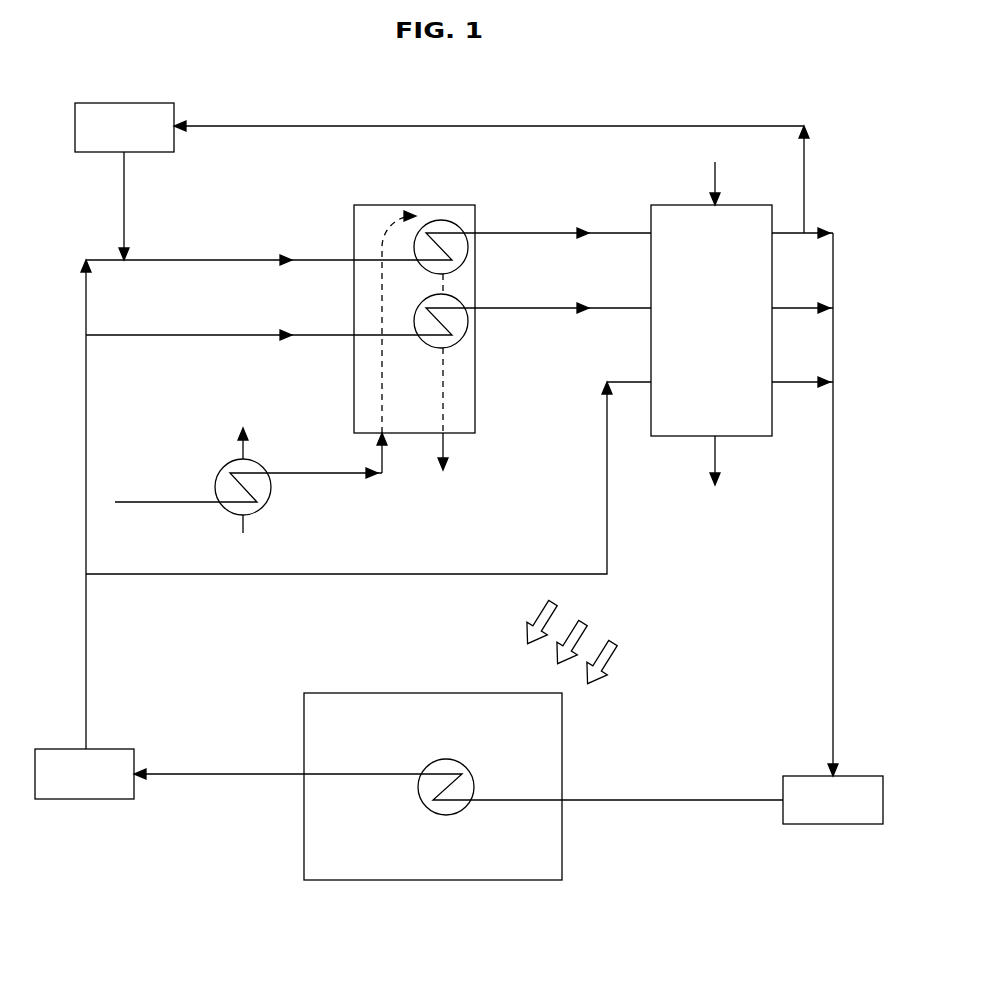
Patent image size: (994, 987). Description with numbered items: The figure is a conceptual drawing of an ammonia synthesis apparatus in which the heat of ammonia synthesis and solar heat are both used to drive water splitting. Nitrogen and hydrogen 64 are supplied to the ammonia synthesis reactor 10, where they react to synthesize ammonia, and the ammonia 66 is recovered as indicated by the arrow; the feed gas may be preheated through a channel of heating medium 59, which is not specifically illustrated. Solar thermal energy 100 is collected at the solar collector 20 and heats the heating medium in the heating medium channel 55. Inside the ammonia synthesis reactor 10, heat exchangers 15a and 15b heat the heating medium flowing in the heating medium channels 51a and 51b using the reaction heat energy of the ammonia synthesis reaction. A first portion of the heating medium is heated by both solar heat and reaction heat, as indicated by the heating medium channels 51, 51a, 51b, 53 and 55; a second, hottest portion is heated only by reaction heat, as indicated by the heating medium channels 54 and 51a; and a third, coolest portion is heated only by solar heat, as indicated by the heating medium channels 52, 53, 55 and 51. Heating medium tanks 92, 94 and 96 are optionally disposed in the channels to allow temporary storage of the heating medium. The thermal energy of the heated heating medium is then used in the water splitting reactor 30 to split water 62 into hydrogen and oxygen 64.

The ammonia synthesis reactor 10 is at (376, 299).
The heat exchanger 15a is at (502, 227).
The heat exchanger 15b is at (502, 301).
The solar collector 20 is at (473, 786).
The water splitting reactor 30 is at (671, 304).
The heating medium channel 51 is at (132, 504).
The heating medium channel 51a is at (220, 208).
The heating medium channel 51b is at (220, 310).
The heating medium channel 52 is at (368, 478).
The heating medium channel 53 is at (786, 502).
The heating medium channel 54 is at (491, 156).
The heating medium channel 55 is at (458, 812).
The channel of heating medium 59 is at (248, 501).
The water 62 is at (694, 172).
The nitrogen and hydrogen 64 is at (541, 461).
The ammonia 66 is at (485, 386).
The heating medium tank 92 is at (129, 759).
The heating medium tank 94 is at (795, 779).
The heating medium tank 96 is at (156, 148).
The solar thermal energy 100 is at (604, 642).